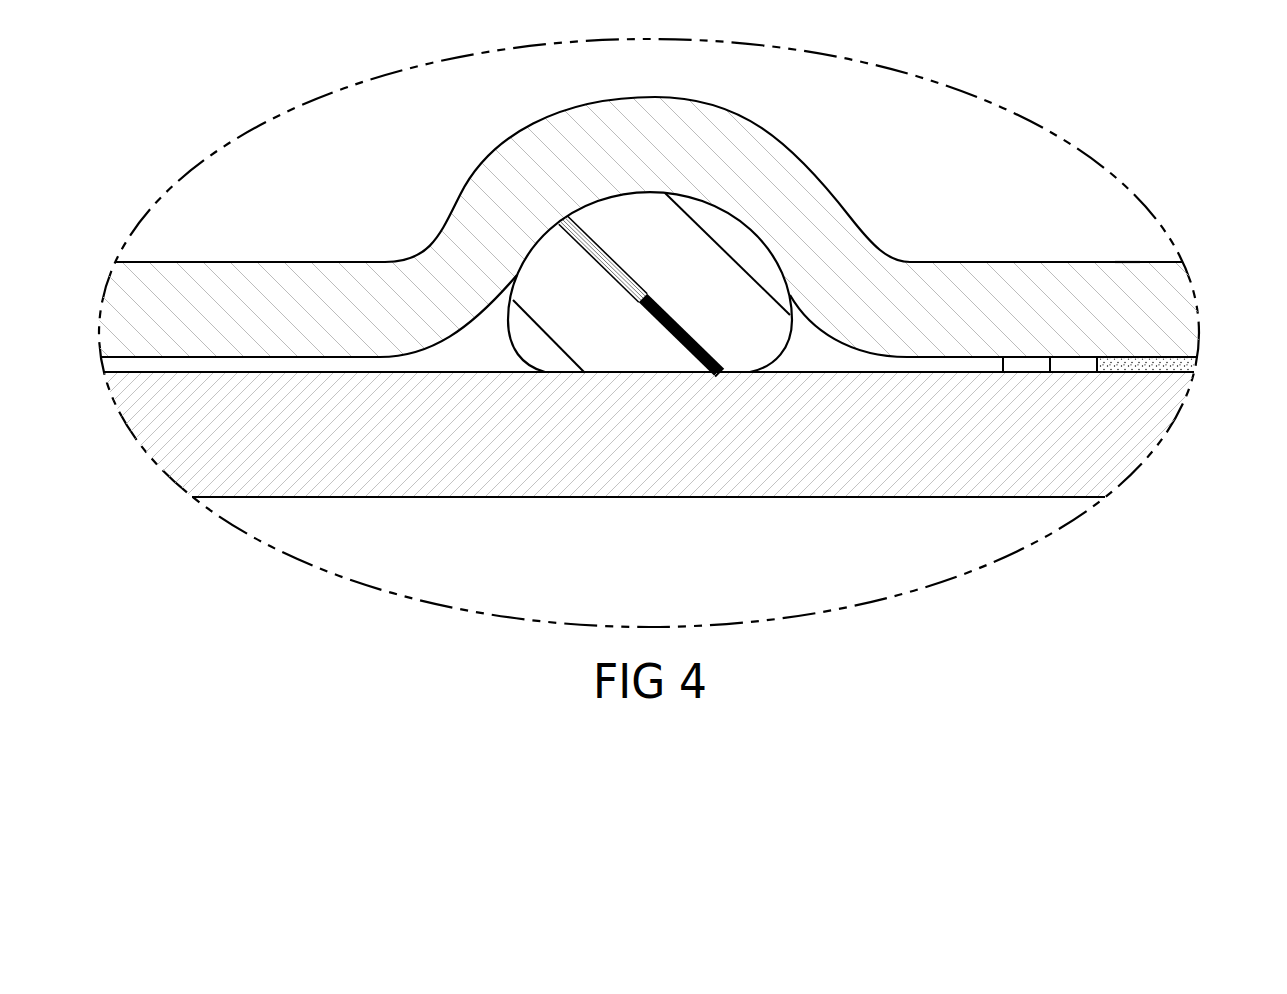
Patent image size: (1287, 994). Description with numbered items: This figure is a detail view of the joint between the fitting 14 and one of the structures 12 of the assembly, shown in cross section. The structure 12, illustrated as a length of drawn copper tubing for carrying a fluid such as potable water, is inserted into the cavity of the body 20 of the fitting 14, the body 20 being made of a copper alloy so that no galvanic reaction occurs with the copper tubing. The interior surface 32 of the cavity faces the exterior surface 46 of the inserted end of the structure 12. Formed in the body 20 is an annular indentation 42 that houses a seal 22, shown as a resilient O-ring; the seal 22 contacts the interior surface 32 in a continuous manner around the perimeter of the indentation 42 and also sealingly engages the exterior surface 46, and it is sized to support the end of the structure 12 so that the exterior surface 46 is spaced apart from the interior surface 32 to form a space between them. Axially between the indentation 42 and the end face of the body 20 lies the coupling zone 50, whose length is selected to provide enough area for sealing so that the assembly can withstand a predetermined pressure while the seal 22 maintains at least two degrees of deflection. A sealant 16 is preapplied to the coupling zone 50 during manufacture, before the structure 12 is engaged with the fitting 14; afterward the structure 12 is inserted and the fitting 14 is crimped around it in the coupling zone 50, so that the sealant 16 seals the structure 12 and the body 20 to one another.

The structure 12 is at (1142, 433).
The fitting 14 is at (1177, 310).
The sealant 16 is at (1185, 365).
The body 20 is at (893, 292).
The seal 22 is at (688, 255).
The interior surface 32 is at (1050, 372).
The annular indentation 42 is at (543, 162).
The exterior surface 46 is at (1003, 372).
The coupling zone 50 is at (1130, 247).